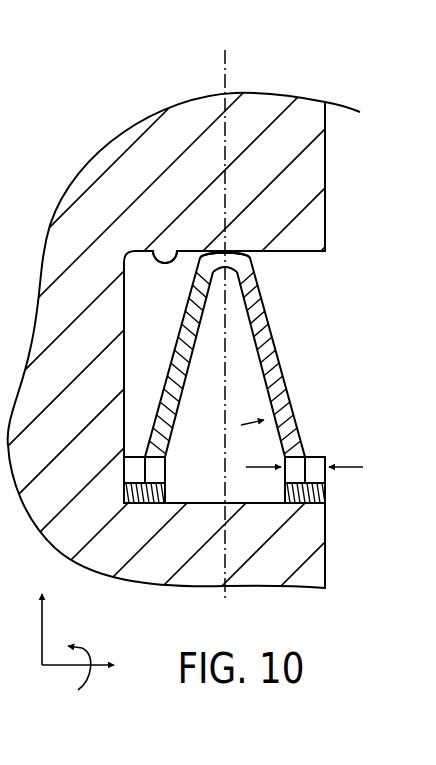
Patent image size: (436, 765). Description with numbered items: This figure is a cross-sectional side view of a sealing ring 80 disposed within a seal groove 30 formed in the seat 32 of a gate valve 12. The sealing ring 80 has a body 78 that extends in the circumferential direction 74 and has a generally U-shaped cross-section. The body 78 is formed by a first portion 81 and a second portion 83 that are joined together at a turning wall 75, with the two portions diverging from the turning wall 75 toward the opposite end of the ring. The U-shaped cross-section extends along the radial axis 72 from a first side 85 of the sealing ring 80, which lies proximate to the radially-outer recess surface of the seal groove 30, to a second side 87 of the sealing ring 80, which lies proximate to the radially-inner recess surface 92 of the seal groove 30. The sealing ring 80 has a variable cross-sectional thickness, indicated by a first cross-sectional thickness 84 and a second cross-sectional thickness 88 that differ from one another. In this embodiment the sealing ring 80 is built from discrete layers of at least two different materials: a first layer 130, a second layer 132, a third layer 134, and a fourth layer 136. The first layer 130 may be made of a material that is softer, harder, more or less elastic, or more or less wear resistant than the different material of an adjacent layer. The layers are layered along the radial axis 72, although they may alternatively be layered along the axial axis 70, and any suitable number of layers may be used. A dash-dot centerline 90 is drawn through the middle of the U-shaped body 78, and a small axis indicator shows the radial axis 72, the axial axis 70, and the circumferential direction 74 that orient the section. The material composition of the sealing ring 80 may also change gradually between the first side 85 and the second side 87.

The gate valve 12 is at (350, 90).
The seat 32 is at (320, 116).
The second side 87 is at (250, 241).
The radially-inner recess surface 92 is at (170, 262).
The first side 85 is at (148, 508).
The central axis 90 is at (222, 72).
The fourth layer 136 is at (250, 272).
The turning wall 75 is at (206, 272).
The first portion 81 is at (181, 338).
The third layer 134 is at (164, 398).
The body 78 is at (269, 336).
The second portion 83 is at (281, 364).
The sealing ring 80 is at (316, 310).
The seal groove 30 is at (327, 274).
The second cross-sectional thickness 88 is at (300, 406).
The second layer 132 is at (306, 452).
The first cross-sectional thickness 84 is at (352, 466).
The first layer 130 is at (327, 488).
The radial axis 72 is at (45, 632).
The axial axis 70 is at (72, 667).
The circumferential direction 74 is at (86, 648).